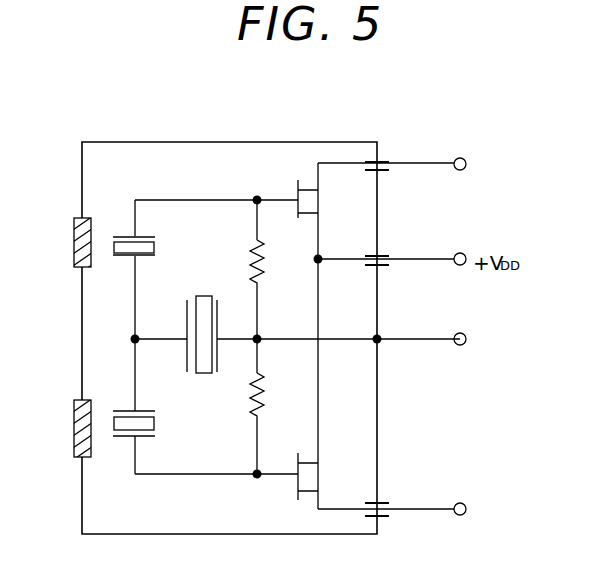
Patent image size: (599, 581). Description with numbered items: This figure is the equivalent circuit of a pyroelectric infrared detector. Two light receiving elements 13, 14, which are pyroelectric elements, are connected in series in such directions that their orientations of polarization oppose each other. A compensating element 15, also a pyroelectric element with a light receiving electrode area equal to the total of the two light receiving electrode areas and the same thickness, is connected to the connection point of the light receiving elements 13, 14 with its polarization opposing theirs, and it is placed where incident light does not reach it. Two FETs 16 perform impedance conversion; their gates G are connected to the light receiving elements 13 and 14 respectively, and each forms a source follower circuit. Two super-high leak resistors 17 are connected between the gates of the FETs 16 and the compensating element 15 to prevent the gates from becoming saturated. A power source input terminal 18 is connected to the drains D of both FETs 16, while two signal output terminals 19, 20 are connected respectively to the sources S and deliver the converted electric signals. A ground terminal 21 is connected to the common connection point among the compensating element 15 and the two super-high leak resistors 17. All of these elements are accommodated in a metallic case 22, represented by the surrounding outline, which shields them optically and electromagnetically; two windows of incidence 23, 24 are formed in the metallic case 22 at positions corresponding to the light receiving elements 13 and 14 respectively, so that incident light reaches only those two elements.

The light receiving element 13 is at (157, 246).
The light receiving element 14 is at (157, 424).
The compensating element 15 is at (221, 311).
The FET 16 is at (309, 173).
The super-high leak resistor 17 is at (268, 277).
The power source input terminal 18 is at (424, 257).
The signal output terminal 19 is at (424, 163).
The signal output terminal 20 is at (428, 507).
The ground terminal 21 is at (425, 341).
The metallic case 22 is at (237, 138).
The window of incidence 23 is at (72, 238).
The window of incidence 24 is at (72, 412).